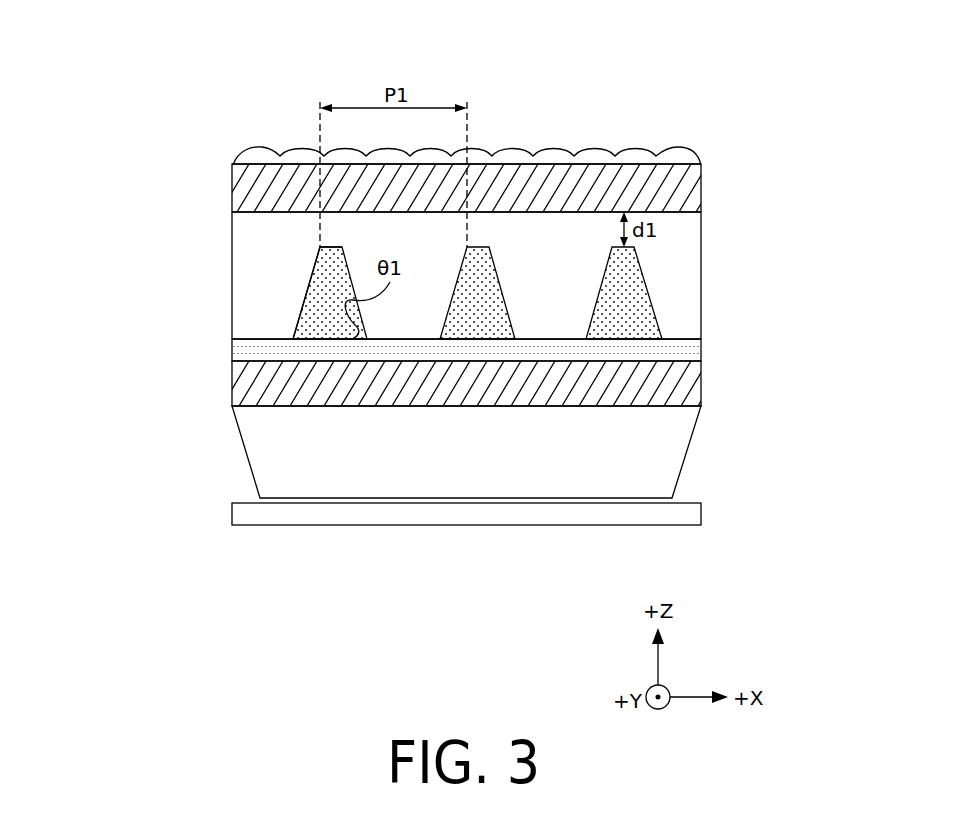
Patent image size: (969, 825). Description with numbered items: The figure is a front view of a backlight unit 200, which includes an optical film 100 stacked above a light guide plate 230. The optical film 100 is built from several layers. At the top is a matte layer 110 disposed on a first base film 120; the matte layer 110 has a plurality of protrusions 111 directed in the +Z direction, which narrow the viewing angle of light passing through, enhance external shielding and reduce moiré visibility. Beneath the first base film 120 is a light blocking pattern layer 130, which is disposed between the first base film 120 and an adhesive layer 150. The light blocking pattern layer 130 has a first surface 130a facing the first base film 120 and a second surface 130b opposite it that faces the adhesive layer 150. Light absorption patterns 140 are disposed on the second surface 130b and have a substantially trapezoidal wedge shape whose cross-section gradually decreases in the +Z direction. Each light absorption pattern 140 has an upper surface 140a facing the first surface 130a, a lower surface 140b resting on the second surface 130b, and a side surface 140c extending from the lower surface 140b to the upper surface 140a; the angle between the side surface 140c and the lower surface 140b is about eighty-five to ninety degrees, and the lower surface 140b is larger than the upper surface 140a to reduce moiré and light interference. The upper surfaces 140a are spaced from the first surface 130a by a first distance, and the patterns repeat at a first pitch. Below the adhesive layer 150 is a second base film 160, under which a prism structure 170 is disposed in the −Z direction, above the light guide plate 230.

The backlight unit 200 is at (458, 298).
The optical film 100 is at (219, 254).
The matte layer 110 is at (508, 105).
The protrusions 111 is at (513, 147).
The first base film 120 is at (688, 190).
The light blocking pattern layer 130 is at (464, 272).
The first surface 130a is at (259, 212).
The second surface 130b is at (260, 339).
The light absorption pattern 140 is at (465, 321).
The upper surface 140a is at (320, 262).
The lower surface 140b is at (312, 338).
The side surface 140c is at (308, 289).
The adhesive layer 150 is at (692, 352).
The second base film 160 is at (688, 388).
The prism structure 170 is at (677, 447).
The light guide plate 230 is at (697, 514).